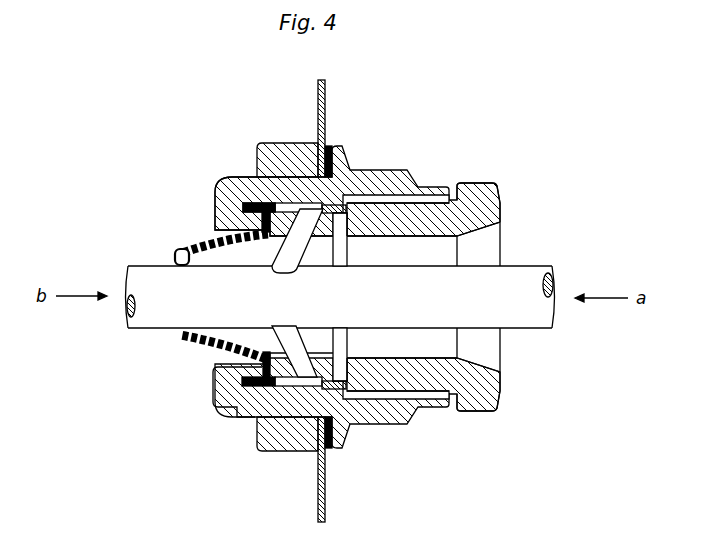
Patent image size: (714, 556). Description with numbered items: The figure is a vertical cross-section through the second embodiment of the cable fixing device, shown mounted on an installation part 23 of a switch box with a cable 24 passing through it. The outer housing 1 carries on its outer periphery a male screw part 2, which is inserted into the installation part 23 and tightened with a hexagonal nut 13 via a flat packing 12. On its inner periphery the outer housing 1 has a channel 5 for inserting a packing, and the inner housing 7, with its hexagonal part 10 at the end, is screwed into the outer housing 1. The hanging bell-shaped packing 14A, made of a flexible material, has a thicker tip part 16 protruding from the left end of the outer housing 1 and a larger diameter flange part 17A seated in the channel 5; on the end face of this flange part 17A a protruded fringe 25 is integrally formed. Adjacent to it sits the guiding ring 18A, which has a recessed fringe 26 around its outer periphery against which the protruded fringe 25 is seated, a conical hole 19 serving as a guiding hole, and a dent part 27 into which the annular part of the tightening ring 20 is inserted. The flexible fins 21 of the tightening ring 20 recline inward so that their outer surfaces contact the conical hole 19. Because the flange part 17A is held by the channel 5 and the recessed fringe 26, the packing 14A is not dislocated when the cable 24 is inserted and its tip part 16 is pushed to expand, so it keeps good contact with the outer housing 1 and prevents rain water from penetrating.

The outer housing 1 is at (389, 173).
The male screw part 2 is at (233, 176).
The channel for inserting a packing 5 is at (242, 208).
The inner housing 7 is at (490, 212).
The hexagonal part 10 is at (484, 184).
The flat packing 12 is at (327, 147).
The hexagonal nut 13 is at (296, 143).
The hanging bell-shaped packing 14A is at (200, 243).
The tip part 16 is at (177, 252).
The larger diameter flange part 17A is at (238, 204).
The guiding ring 18A is at (276, 238).
The conical hole 19 is at (262, 386).
The tightening ring 20 is at (267, 446).
The flexible fins 21 is at (212, 388).
The installation part 23 is at (325, 90).
The cable 24 is at (525, 322).
The protruded fringe 25 is at (285, 331).
The recessed fringe 26 is at (287, 225).
The dent part 27 is at (318, 387).